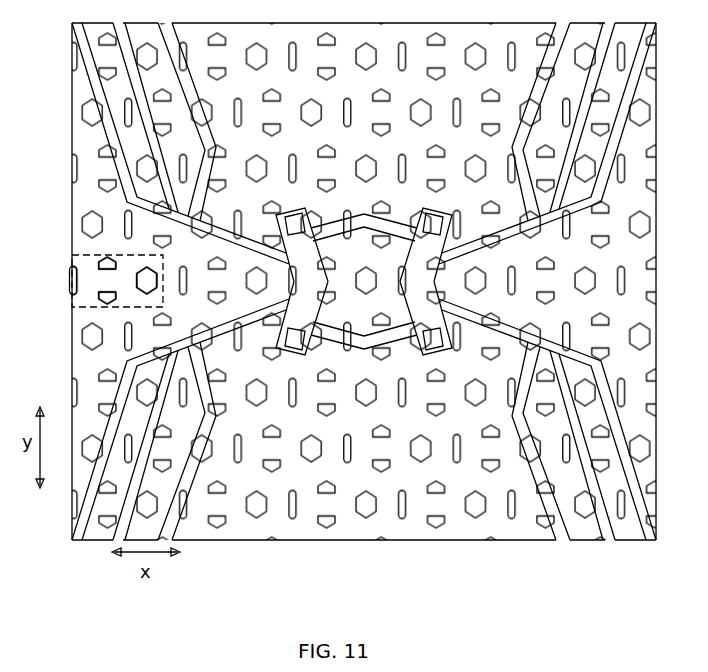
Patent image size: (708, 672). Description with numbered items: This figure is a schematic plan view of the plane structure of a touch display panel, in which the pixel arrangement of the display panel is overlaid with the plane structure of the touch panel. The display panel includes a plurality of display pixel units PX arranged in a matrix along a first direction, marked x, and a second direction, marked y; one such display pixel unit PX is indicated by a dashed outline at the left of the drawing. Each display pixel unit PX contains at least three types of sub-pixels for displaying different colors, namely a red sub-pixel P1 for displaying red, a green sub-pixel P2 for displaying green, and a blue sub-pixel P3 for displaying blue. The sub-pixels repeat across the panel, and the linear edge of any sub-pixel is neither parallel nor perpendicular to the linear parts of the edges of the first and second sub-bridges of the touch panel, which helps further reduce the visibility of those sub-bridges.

The display pixel unit PX is at (75, 264).
The red sub-pixel P1 is at (77, 278).
The green sub-pixel P2 is at (116, 266).
The blue sub-pixel P3 is at (149, 287).